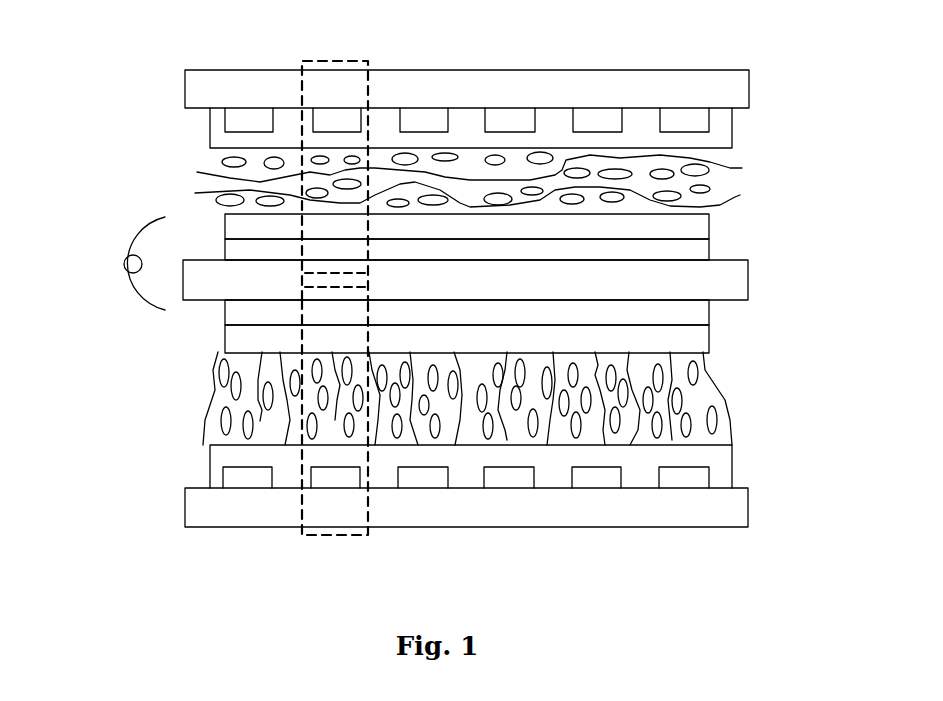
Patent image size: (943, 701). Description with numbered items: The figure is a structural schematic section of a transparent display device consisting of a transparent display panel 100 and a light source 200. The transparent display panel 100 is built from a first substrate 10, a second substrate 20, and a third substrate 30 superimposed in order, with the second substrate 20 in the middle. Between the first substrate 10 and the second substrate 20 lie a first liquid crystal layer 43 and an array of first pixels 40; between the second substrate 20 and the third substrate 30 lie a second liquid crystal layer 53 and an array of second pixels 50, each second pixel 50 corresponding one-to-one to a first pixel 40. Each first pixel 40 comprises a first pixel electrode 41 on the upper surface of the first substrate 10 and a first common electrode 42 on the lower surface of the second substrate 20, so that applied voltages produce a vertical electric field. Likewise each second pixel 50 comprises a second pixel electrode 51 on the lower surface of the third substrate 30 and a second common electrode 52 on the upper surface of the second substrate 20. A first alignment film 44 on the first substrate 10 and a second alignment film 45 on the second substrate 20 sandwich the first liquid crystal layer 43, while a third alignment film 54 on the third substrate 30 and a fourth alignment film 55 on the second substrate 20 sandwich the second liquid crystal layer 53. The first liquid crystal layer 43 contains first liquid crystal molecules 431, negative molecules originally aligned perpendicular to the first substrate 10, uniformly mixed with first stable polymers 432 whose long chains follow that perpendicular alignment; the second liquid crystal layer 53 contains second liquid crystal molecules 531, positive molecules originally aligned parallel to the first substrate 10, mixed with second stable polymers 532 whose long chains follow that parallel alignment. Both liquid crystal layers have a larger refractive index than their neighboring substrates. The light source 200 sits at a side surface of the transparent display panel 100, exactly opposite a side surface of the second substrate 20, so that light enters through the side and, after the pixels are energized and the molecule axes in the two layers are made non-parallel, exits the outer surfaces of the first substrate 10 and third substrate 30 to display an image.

The transparent display panel 100 is at (208, 60).
The light source 200 is at (113, 225).
The first substrate 10 is at (242, 503).
The second substrate 20 is at (718, 288).
The third substrate 30 is at (267, 90).
The first pixel 40 is at (337, 538).
The first pixel electrode 41 is at (416, 477).
The first common electrode 42 is at (690, 315).
The first liquid crystal layer 43 is at (657, 572).
The first liquid crystal molecules 431 is at (532, 428).
The first stable polymer 432 is at (622, 430).
The first alignment film 44 is at (700, 458).
The second alignment film 45 is at (690, 342).
The second pixel 50 is at (338, 58).
The second pixel electrode 51 is at (418, 122).
The second common electrode 52 is at (690, 255).
The second liquid crystal layer 53 is at (665, 28).
The second liquid crystal molecules 531 is at (540, 160).
The second stable polymer 532 is at (640, 168).
The third alignment film 54 is at (700, 142).
The fourth alignment film 55 is at (690, 227).